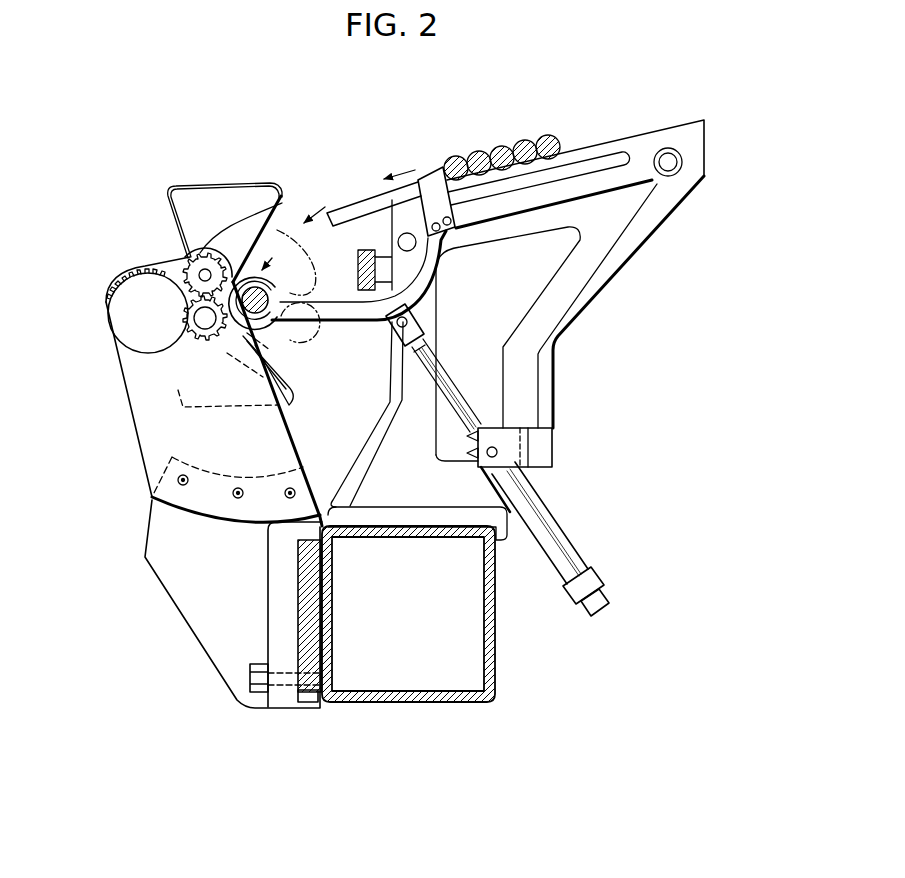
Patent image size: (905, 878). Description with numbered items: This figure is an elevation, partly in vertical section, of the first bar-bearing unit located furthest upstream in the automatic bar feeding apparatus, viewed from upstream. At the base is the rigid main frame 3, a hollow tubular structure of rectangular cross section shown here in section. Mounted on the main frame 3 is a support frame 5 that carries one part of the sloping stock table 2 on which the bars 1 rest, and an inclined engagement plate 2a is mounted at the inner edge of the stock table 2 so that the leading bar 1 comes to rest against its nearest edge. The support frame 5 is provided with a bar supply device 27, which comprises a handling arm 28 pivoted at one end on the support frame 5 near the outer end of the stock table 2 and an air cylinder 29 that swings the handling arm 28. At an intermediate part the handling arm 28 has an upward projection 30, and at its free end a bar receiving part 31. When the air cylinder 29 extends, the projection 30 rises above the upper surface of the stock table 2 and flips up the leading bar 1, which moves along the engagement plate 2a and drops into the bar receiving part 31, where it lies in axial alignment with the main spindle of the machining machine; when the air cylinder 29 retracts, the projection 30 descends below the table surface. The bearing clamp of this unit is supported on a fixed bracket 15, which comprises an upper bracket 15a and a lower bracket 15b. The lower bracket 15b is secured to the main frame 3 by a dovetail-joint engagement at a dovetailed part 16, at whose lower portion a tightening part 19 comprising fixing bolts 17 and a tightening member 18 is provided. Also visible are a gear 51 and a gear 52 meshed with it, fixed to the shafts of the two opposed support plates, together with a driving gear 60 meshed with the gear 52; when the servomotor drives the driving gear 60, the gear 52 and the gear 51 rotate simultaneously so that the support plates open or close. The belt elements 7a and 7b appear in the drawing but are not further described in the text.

The bar 1 is at (547, 136).
The stock table 2 is at (634, 137).
The inclined engagement plate 2a is at (354, 206).
The main frame 3 is at (490, 607).
The support frame 5 is at (595, 252).
The belt 7a is at (220, 202).
The belt portion 7b is at (292, 392).
The fixed bracket 15 is at (116, 390).
The upper bracket 15a is at (143, 438).
The lower bracket 15b is at (172, 575).
The dovetailed part 16 is at (312, 613).
The fixing bolt 17 is at (277, 683).
The tightening member 18 is at (314, 667).
The tightening part 19 is at (306, 700).
The bar supply device 27 is at (426, 303).
The handling arm 28 is at (490, 219).
The air cylinder 29 is at (530, 515).
The projection 30 is at (433, 178).
The bar receiving part 31 is at (270, 318).
The gear 51 is at (188, 258).
The gear 52 is at (206, 343).
The driving gear 60 is at (122, 316).